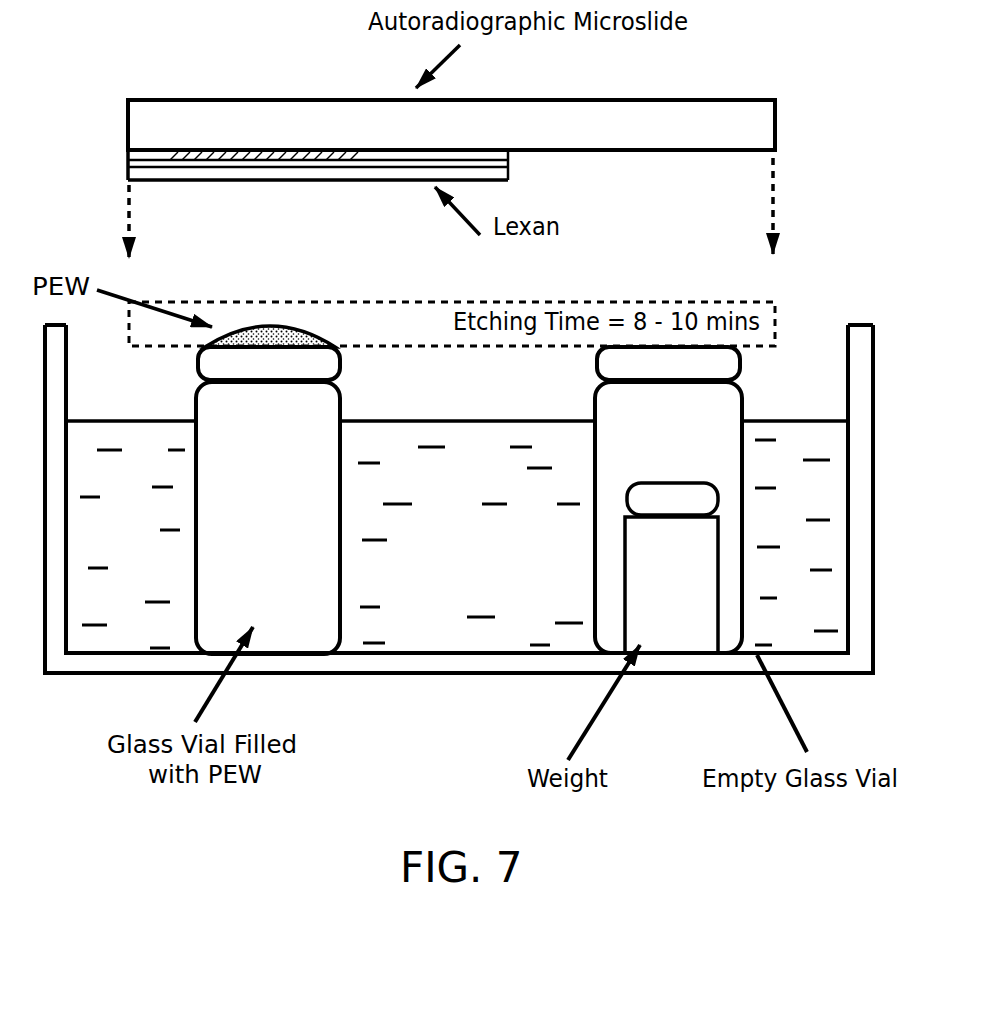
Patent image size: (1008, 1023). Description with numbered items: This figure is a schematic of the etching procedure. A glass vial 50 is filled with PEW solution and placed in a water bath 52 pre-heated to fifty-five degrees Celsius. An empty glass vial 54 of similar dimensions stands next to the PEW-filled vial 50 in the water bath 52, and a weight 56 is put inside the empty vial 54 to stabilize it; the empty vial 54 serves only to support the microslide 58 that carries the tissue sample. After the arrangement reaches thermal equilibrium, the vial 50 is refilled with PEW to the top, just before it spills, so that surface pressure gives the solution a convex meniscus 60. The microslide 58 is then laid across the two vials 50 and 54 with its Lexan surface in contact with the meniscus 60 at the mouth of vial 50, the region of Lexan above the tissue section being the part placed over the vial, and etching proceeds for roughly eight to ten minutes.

The glass vial 50 is at (288, 462).
The water bath 52 is at (470, 420).
The empty glass vial 54 is at (699, 443).
The weight 56 is at (705, 630).
The microslide 58 is at (775, 122).
The meniscus 60 is at (290, 345).